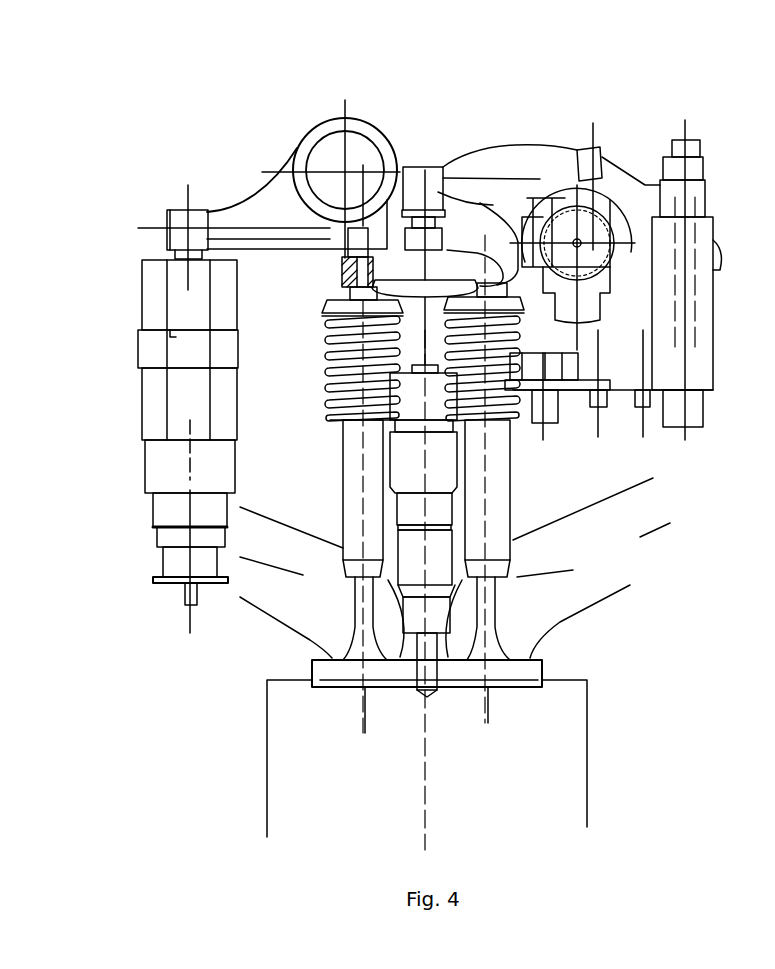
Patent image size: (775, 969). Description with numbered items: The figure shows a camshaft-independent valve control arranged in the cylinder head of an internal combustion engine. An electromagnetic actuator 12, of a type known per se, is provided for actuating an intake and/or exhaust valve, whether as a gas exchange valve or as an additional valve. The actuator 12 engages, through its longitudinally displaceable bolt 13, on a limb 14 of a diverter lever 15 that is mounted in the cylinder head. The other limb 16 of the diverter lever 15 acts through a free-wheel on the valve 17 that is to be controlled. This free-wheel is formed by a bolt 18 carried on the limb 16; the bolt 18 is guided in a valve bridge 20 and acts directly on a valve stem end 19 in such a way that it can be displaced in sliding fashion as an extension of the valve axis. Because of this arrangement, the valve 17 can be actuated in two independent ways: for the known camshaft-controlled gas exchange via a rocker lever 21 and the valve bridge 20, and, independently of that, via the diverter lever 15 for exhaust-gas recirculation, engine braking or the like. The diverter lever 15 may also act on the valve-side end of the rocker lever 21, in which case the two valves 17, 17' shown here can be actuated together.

The electromagnetic actuator 12 is at (168, 472).
The longitudinally displaceable bolt 13 is at (176, 256).
The limb of the diverter lever 14 is at (249, 207).
The diverter lever 15 is at (316, 91).
The other limb of the diverter lever 16 is at (346, 257).
The valve 17 is at (343, 516).
The second valve 17' is at (517, 479).
The bolt on the limb 18 is at (364, 247).
The valve stem end 19 is at (327, 322).
The valve bridge 20 is at (431, 262).
The rocker lever 21 is at (549, 164).